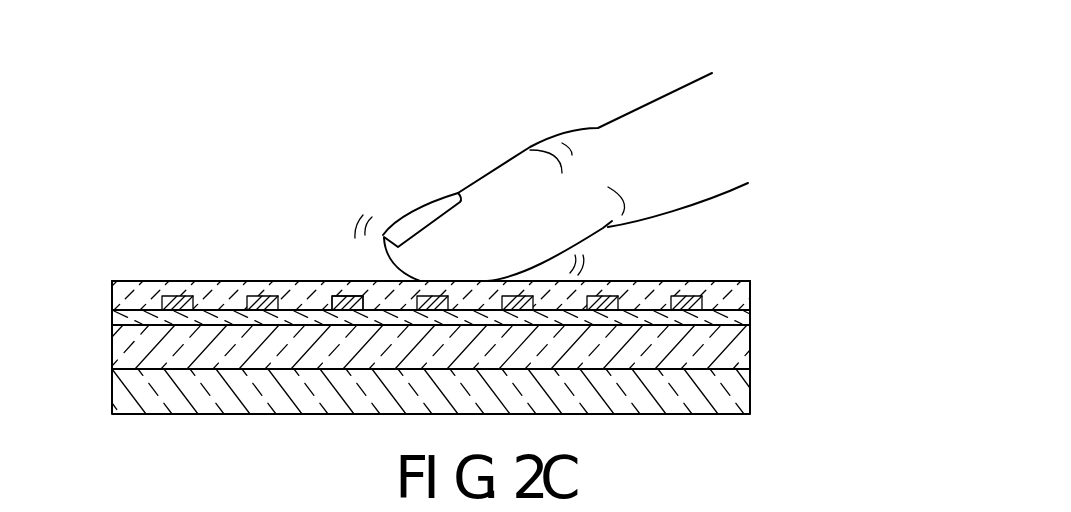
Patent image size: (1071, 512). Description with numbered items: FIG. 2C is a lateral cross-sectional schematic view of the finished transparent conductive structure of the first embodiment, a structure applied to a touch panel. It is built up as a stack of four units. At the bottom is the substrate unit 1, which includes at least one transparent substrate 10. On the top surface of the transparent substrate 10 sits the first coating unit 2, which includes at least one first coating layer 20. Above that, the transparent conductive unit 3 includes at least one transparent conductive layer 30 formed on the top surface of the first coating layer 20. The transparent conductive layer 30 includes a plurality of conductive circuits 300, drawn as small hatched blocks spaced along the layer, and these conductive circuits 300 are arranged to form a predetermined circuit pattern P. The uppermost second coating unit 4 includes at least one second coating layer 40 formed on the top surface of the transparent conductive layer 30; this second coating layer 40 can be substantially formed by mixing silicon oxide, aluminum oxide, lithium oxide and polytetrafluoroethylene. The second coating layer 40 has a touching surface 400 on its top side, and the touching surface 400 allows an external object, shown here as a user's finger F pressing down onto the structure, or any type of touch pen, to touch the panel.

The substrate unit 1 is at (737, 392).
The transparent substrate 10 is at (487, 391).
The first coating unit 2 is at (737, 342).
The first coating layer 20 is at (487, 347).
The transparent conductive unit 3 is at (737, 319).
The transparent conductive layer 30 is at (487, 302).
The second coating unit 4 is at (703, 291).
The second coating layer 40 is at (487, 272).
The conductive circuits 300 is at (266, 295).
The touching surface 400 is at (180, 281).
The predetermined circuit pattern P is at (344, 297).
The user's finger F is at (458, 182).